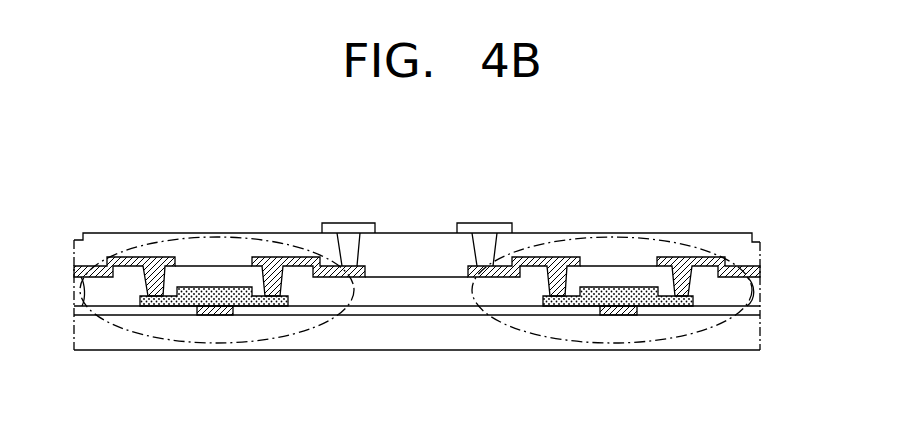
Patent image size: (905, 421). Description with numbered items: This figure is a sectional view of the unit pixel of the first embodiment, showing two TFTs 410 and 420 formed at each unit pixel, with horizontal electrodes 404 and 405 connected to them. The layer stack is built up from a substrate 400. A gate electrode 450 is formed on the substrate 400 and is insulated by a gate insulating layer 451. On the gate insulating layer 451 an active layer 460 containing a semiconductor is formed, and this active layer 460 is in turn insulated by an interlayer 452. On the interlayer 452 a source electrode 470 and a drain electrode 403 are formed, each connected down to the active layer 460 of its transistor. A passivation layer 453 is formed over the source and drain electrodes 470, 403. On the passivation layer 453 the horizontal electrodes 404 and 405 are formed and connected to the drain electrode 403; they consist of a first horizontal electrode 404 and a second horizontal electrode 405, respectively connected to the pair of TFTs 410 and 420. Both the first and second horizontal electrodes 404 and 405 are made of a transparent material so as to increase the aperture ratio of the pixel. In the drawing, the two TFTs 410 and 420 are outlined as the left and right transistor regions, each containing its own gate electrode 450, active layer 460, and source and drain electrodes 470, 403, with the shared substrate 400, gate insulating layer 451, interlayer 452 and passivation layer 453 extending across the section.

The substrate 400 is at (757, 337).
The gate insulating layer 451 is at (757, 309).
The interlayer 452 is at (757, 282).
The passivation layer 453 is at (757, 253).
The gate electrode 450 is at (217, 316).
The active layer 460 is at (272, 306).
The source electrode 470 is at (142, 257).
The drain electrode 403 is at (291, 257).
The first horizontal electrode 404 is at (346, 232).
The second horizontal electrode 405 is at (485, 232).
The TFT 410 is at (145, 337).
The TFT 420 is at (690, 332).